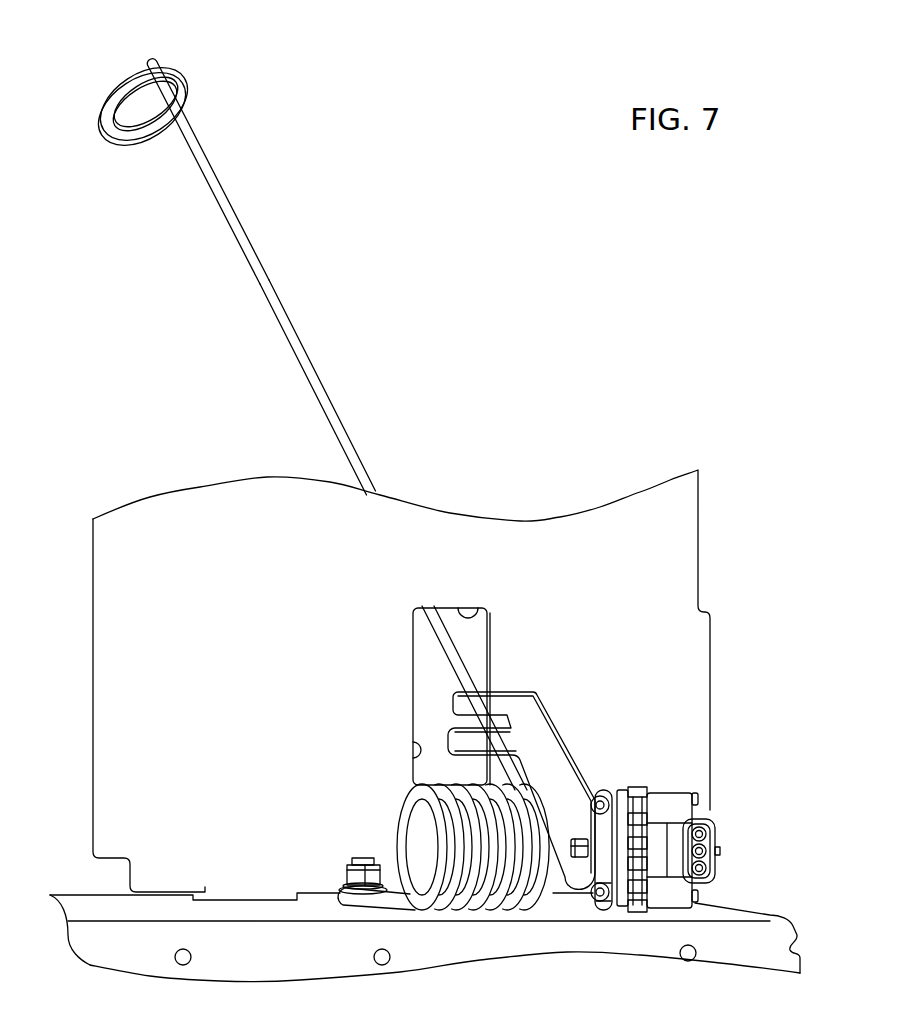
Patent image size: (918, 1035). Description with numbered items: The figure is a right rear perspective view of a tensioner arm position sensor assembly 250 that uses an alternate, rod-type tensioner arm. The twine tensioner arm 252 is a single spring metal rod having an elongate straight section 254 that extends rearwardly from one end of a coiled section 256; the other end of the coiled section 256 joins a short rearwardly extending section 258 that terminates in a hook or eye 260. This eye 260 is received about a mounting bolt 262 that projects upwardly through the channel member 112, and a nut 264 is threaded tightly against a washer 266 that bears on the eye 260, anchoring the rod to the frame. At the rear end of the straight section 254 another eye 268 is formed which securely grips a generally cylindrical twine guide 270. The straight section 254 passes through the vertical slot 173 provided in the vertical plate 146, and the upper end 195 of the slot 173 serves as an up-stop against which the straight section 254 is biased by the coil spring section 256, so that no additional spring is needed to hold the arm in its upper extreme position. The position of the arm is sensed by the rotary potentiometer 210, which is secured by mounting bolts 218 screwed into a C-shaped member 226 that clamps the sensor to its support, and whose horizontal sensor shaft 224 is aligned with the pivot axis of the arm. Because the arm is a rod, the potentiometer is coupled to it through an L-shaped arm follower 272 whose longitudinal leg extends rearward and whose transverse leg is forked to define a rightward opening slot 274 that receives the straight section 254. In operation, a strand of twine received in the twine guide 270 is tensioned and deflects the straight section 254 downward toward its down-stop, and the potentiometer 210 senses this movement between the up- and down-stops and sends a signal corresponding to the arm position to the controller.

The channel member 112 is at (357, 939).
The vertical plate 146 is at (630, 573).
The slot 173 is at (412, 756).
The upper end of the slot 195 is at (477, 608).
The rotary potentiometer 210 is at (672, 777).
The mounting bolt 218 is at (697, 893).
The sensor shaft 224 is at (577, 857).
The C-shaped member 226 is at (603, 898).
The tensioner arm position sensor assembly 250 is at (533, 438).
The twine tensioner arm 252 is at (287, 284).
The elongate straight section 254 is at (247, 270).
The coiled section 256 is at (478, 873).
The short rearwardly extending section 258 is at (343, 905).
The hook or eye 260 is at (383, 865).
The mounting bolt 262 is at (355, 858).
The nut 264 is at (348, 872).
The washer 266 is at (343, 885).
The eye 268 is at (123, 88).
The twine guide 270 is at (160, 125).
The L-shaped arm follower 272 is at (540, 692).
The slot 274 is at (463, 728).